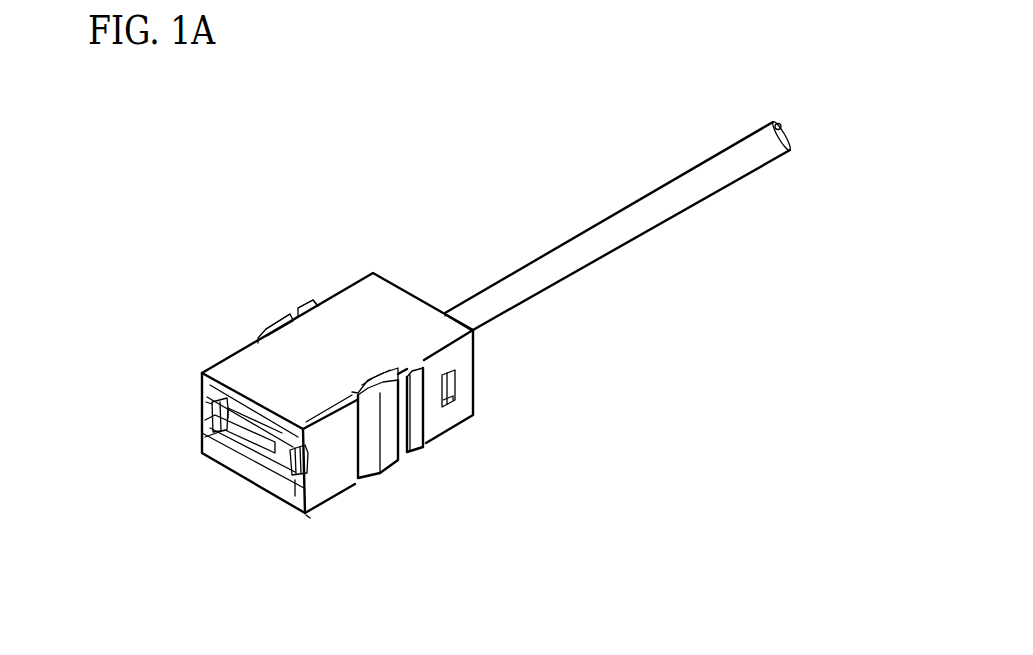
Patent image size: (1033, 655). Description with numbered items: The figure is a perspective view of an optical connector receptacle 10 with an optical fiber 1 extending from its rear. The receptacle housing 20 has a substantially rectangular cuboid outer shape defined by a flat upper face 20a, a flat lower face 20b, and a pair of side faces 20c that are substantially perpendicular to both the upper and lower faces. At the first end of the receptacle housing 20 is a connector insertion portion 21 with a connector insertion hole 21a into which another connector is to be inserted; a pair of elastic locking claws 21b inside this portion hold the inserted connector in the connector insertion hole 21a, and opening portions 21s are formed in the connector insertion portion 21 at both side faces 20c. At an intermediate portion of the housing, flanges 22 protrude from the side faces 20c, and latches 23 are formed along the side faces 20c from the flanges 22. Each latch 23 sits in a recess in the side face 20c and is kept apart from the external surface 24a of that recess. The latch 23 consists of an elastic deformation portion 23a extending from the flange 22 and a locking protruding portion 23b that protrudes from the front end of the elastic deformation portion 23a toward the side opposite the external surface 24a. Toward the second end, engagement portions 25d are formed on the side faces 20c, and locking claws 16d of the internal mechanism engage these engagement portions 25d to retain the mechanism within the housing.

The optical fiber 1 is at (646, 186).
The optical connector receptacle 10 is at (351, 194).
The receptacle housing 20 is at (460, 429).
The upper face 20a is at (332, 320).
The lower face 20b is at (325, 500).
The side faces 20c is at (350, 286).
The connector insertion portion 21 is at (217, 470).
The connector insertion hole 21a is at (272, 455).
The elastic locking claws 21b is at (206, 413).
The opening portions 21s is at (206, 403).
The flanges 22 is at (302, 303).
The latches 23 is at (272, 325).
The elastic deformation portion 23a is at (412, 452).
The locking protruding portion 23b is at (390, 462).
The external surface 24a is at (390, 368).
The locking claws 16d is at (449, 388).
The engagement portions 25d is at (454, 400).